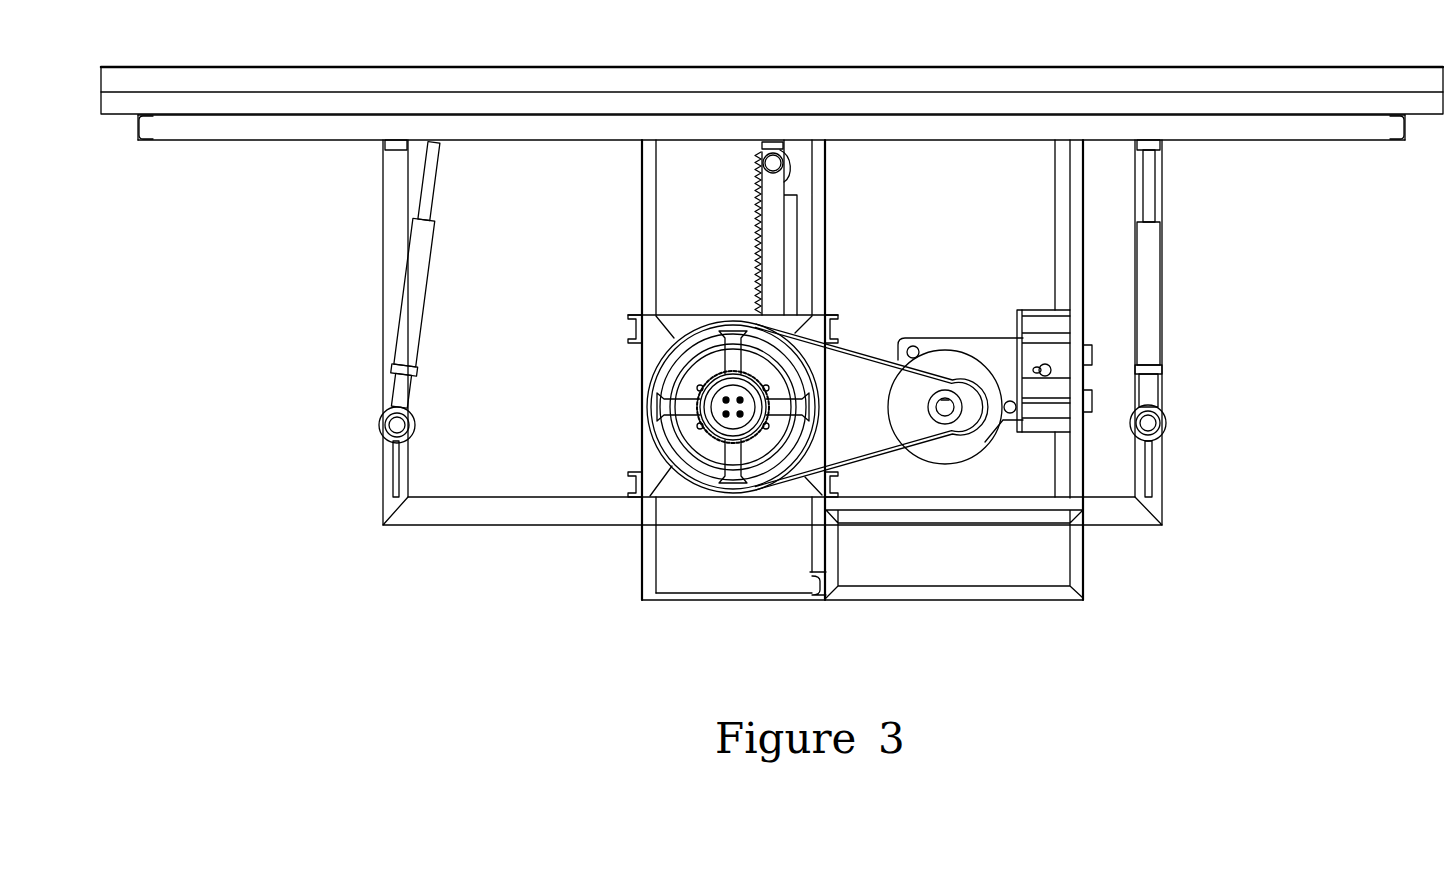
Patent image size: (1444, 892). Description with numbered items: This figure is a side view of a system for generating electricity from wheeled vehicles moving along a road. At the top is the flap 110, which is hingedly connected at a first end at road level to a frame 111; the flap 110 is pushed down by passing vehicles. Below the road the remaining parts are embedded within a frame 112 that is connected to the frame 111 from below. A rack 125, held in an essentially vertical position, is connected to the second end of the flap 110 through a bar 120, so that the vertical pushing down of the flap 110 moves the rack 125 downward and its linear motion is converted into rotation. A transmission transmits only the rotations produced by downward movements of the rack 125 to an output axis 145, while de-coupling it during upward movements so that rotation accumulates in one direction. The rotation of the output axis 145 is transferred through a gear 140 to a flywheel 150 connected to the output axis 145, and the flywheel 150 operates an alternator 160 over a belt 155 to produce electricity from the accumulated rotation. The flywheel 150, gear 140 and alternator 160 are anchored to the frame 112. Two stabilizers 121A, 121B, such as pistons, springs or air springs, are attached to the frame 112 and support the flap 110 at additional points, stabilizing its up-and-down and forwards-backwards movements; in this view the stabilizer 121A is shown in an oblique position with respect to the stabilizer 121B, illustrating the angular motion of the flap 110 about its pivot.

The flap 110 is at (1318, 66).
The frame 111 is at (1393, 138).
The frame 112 is at (396, 178).
The bar 120 is at (757, 150).
The rack 125 is at (768, 230).
The gear 140 is at (697, 362).
The output axis 145 is at (720, 405).
The flywheel 150 is at (660, 347).
The belt 155 is at (860, 352).
The alternator 160 is at (951, 363).
The stabilizer 121A is at (403, 297).
The stabilizer 121B is at (1150, 292).